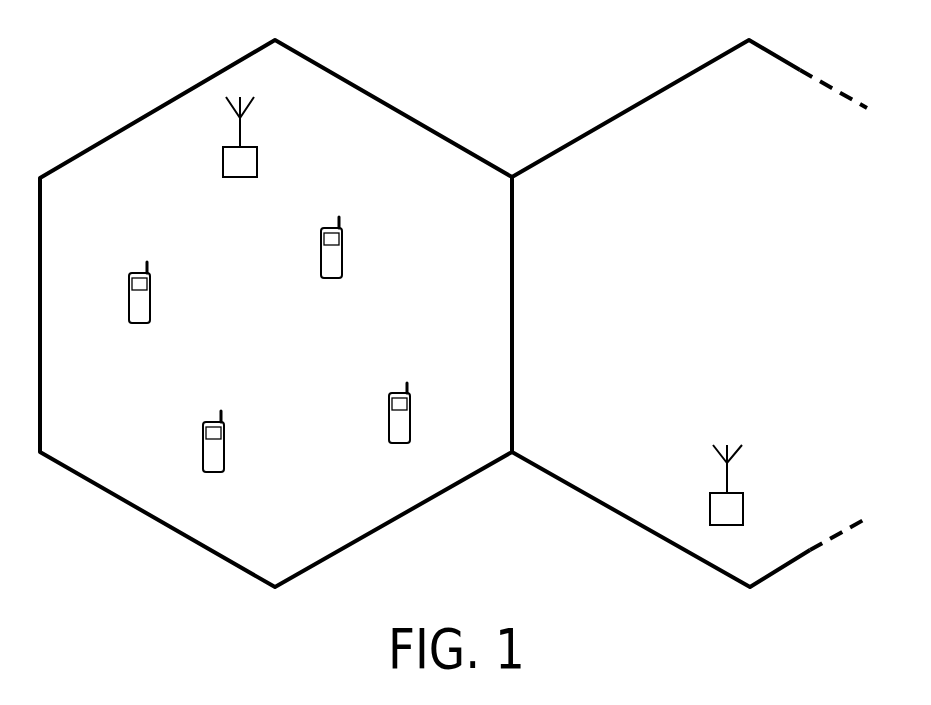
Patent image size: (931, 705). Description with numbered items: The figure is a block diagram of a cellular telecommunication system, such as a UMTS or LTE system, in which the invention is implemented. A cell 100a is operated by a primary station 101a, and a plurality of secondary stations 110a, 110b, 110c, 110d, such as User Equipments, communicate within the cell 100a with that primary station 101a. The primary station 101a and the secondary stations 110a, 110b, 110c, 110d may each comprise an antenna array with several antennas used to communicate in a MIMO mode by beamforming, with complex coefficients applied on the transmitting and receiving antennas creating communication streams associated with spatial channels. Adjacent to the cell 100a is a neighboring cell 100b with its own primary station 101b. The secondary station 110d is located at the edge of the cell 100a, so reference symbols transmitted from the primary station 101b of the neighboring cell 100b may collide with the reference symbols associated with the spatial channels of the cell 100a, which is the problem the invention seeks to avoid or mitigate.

The cell 100a is at (124, 127).
The neighboring cell 100b is at (597, 127).
The primary station 101a is at (245, 163).
The primary station 101b is at (733, 510).
The secondary station 110a is at (143, 305).
The secondary station 110b is at (217, 452).
The secondary station 110c is at (335, 258).
The secondary station 110d is at (403, 424).